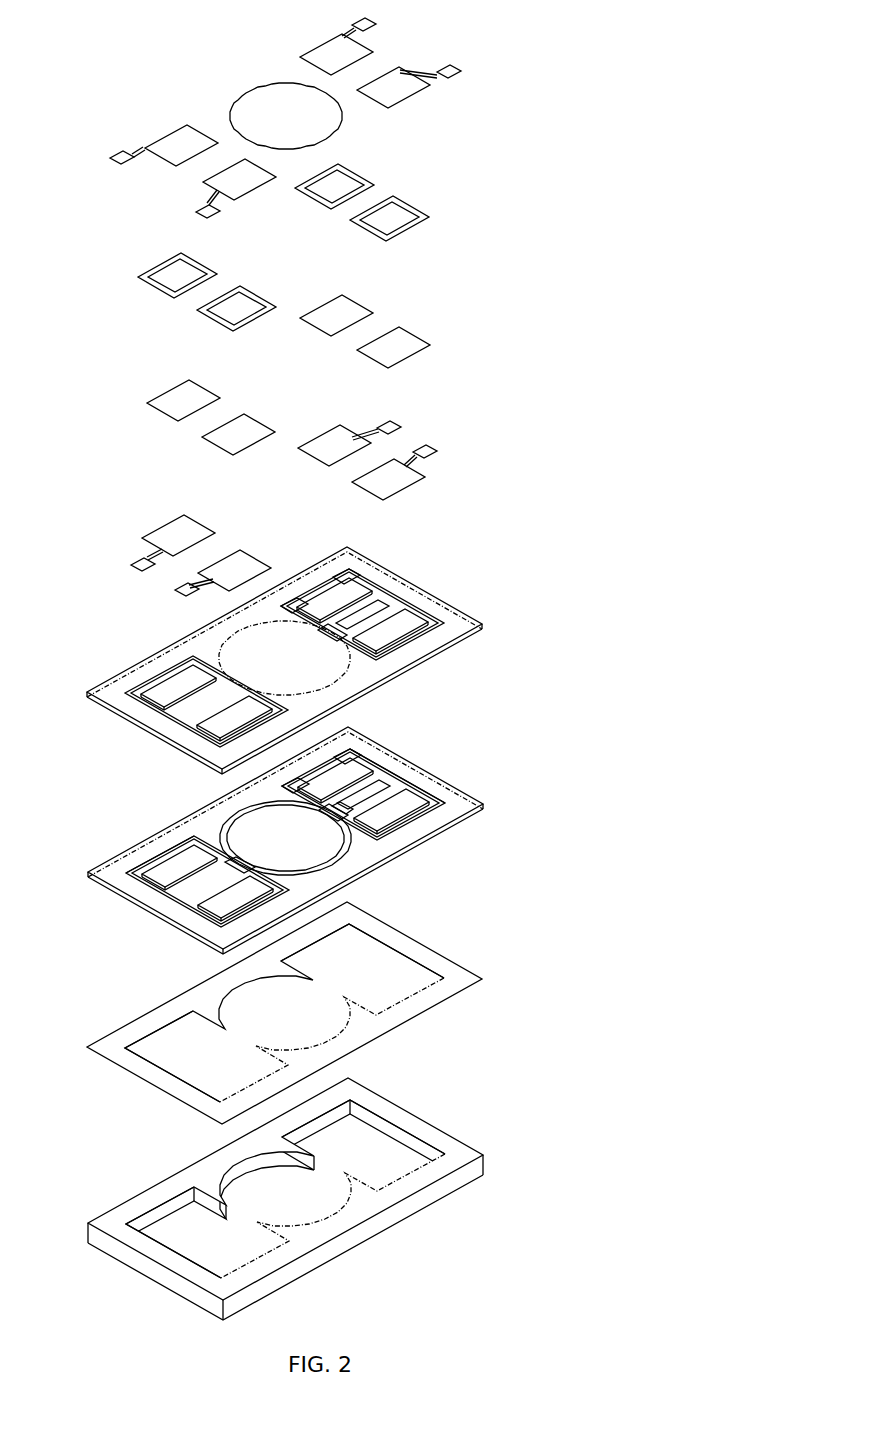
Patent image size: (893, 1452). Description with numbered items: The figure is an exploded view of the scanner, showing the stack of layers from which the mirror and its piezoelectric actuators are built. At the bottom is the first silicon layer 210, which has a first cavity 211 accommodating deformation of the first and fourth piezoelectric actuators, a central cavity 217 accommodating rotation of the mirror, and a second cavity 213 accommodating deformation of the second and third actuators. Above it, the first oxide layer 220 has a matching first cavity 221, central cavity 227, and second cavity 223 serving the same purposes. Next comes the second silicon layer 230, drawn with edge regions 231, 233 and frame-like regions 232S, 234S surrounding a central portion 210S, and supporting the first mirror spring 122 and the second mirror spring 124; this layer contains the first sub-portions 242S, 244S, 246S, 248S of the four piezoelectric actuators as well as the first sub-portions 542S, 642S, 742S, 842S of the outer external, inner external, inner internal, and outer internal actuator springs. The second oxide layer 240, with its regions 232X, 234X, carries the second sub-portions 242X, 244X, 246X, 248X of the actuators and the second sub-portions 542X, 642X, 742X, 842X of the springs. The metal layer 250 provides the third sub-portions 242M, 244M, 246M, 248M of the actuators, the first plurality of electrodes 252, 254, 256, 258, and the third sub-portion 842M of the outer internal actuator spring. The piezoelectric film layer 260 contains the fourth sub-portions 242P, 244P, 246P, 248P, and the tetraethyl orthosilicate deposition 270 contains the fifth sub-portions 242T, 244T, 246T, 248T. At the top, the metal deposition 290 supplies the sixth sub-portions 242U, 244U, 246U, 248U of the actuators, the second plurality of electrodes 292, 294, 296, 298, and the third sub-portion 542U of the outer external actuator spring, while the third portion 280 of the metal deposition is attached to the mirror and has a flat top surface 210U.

The first silicon layer 210 is at (305, 1200).
The first cavity 211 is at (382, 1160).
The second cavity 213 is at (228, 1255).
The central cavity 217 is at (298, 1200).
The first oxide layer 220 is at (301, 1027).
The first cavity 221 is at (395, 983).
The second cavity 223 is at (190, 1057).
The central cavity 227 is at (306, 1018).
The second silicon layer 230 is at (298, 830).
The frame edge 231 is at (430, 805).
The frame edge 233 is at (157, 865).
The second frame 232S is at (425, 805).
The first frame 234S is at (208, 880).
The ring electrode 210S is at (304, 846).
The first sub-portion of the first piezoelectric actuator 242S is at (354, 787).
The first sub-portion of the second piezoelectric actuator 244S is at (198, 874).
The first sub-portion of the third piezoelectric actuator 246S is at (254, 905).
The first sub-portion of the fourth piezoelectric actuator 248S is at (410, 818).
The first sub-portion of the first outer external actuator spring 542S is at (358, 743).
The first sub-portion of the first inner external actuator spring 642S is at (280, 778).
The first sub-portion of the first inner internal actuator spring 742S is at (346, 808).
The first sub-portion of the first outer internal actuator spring 842S is at (365, 792).
The first mirror spring 122 is at (352, 803).
The second mirror spring 124 is at (217, 868).
The second oxide layer 240 is at (303, 653).
The second frame 232X is at (398, 600).
The first frame 234X is at (207, 703).
The second sub-portion of the first piezoelectric actuator 242X is at (353, 607).
The second sub-portion of the second piezoelectric actuator 244X is at (197, 694).
The second sub-portion of the third piezoelectric actuator 246X is at (253, 725).
The second sub-portion of the fourth piezoelectric actuator 248X is at (409, 638).
The second sub-portion of the first outer external actuator spring 542X is at (353, 567).
The second sub-portion of the first inner external actuator spring 642X is at (293, 603).
The second sub-portion of the first inner internal actuator spring 742X is at (347, 627).
The second sub-portion of the first outer internal actuator spring 842X is at (368, 613).
The metal layer 250 is at (315, 498).
The third sub-portion of the first piezoelectric actuator 242M is at (353, 453).
The third sub-portion of the second piezoelectric actuator 244M is at (197, 543).
The third sub-portion of the third piezoelectric actuator 246M is at (253, 578).
The third sub-portion of the fourth piezoelectric actuator 248M is at (407, 487).
The electrode 252 is at (388, 424).
The electrode 254 is at (141, 562).
The electrode 256 is at (181, 590).
The electrode 258 is at (432, 448).
The third sub-portion of the first outer internal actuator spring 842M is at (370, 434).
The piezoelectric film layer 260 is at (339, 375).
The fourth sub-portion of the first piezoelectric actuator 242P is at (355, 323).
The fourth sub-portion of the second piezoelectric actuator 244P is at (202, 408).
The fourth sub-portion of the third piezoelectric actuator 246P is at (257, 442).
The fourth sub-portion of the fourth piezoelectric actuator 248P is at (412, 355).
The tetraethyl orthosilicate (TEOS) deposition 270 is at (335, 265).
The fifth sub-portion of the first piezoelectric actuator 242T is at (330, 210).
The fifth sub-portion of the second piezoelectric actuator 244T is at (174, 300).
The fifth sub-portion of the third piezoelectric actuator 246T is at (233, 333).
The fifth sub-portion of the fourth piezoelectric actuator 248T is at (386, 243).
The third portion of the metal deposition 280 is at (383, 142).
The top surface 210U is at (303, 125).
The metal deposition 290 is at (313, 121).
The sixth sub-portion of the first piezoelectric actuator 242U is at (355, 62).
The sixth sub-portion of the second piezoelectric actuator 244U is at (200, 153).
The sixth sub-portion of the third piezoelectric actuator 246U is at (258, 187).
The sixth sub-portion of the fourth piezoelectric actuator 248U is at (412, 95).
The electrode 292 is at (366, 20).
The electrode 294 is at (117, 160).
The electrode 296 is at (199, 213).
The electrode 298 is at (455, 68).
The third sub-portion of the first outer external actuator spring 542U is at (357, 33).